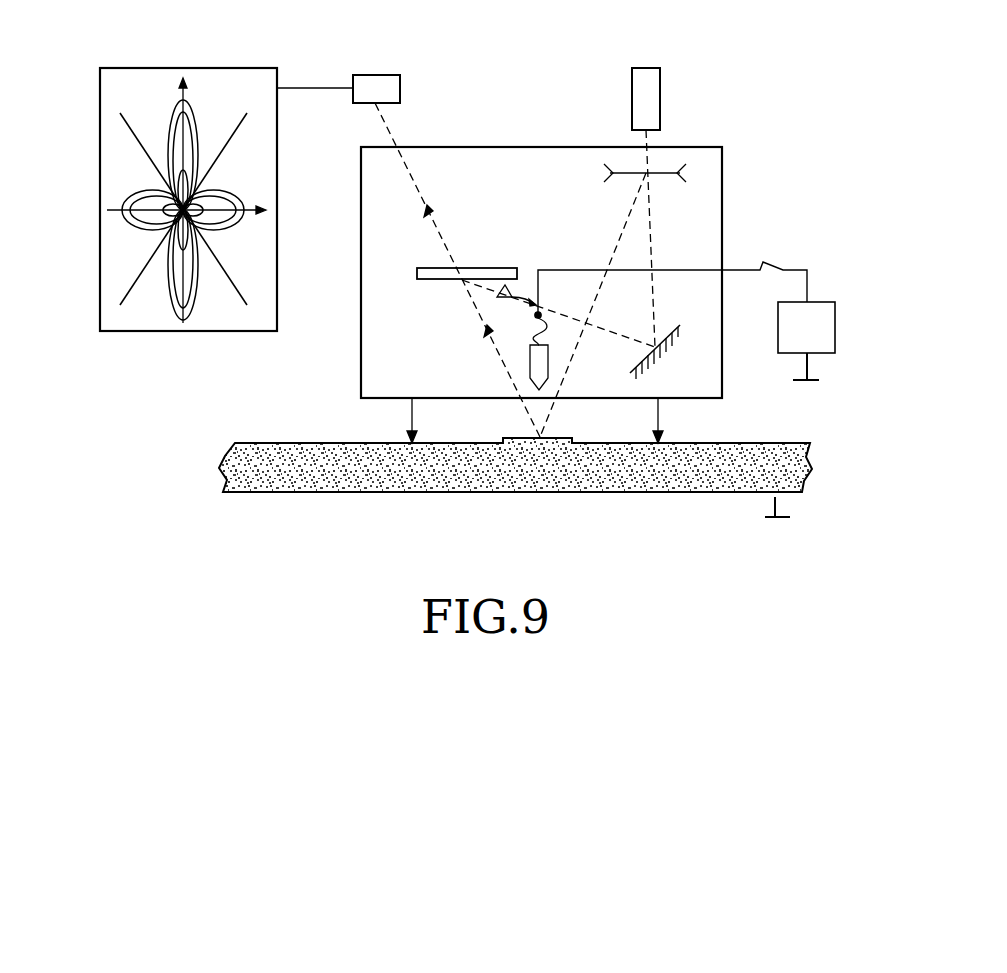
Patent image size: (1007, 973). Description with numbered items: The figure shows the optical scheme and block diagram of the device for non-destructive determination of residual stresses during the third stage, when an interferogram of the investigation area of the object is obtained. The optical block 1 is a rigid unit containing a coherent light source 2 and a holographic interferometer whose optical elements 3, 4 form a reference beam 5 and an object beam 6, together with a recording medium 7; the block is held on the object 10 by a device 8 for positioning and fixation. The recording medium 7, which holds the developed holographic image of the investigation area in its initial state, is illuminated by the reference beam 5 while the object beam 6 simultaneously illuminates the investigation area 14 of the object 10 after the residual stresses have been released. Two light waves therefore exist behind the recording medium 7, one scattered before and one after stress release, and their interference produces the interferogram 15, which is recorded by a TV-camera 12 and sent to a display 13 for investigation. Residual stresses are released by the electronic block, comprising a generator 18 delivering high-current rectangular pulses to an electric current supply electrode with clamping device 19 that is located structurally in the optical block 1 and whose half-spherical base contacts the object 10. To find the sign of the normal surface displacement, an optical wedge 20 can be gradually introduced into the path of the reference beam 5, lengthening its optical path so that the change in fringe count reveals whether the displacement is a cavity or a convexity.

The optical block 1 is at (702, 215).
The coherent light source 2 is at (660, 84).
The optical element of the holographic interferometer 3 is at (629, 175).
The optical element of the holographic interferometer 4 is at (668, 352).
The reference beam 5 is at (672, 288).
The object beam 6 is at (597, 283).
The recording medium 7 is at (455, 275).
The device for positioning and fixation 8 is at (535, 420).
The object 10 is at (730, 497).
The TV-camera 12 is at (378, 75).
The display 13 is at (130, 68).
The measuring spot 14 is at (544, 437).
The interferogram 15 is at (133, 208).
The generator 18 is at (836, 320).
The electric current supply electrode with clamping device 19 is at (521, 349).
The optical wedge 20 is at (497, 297).